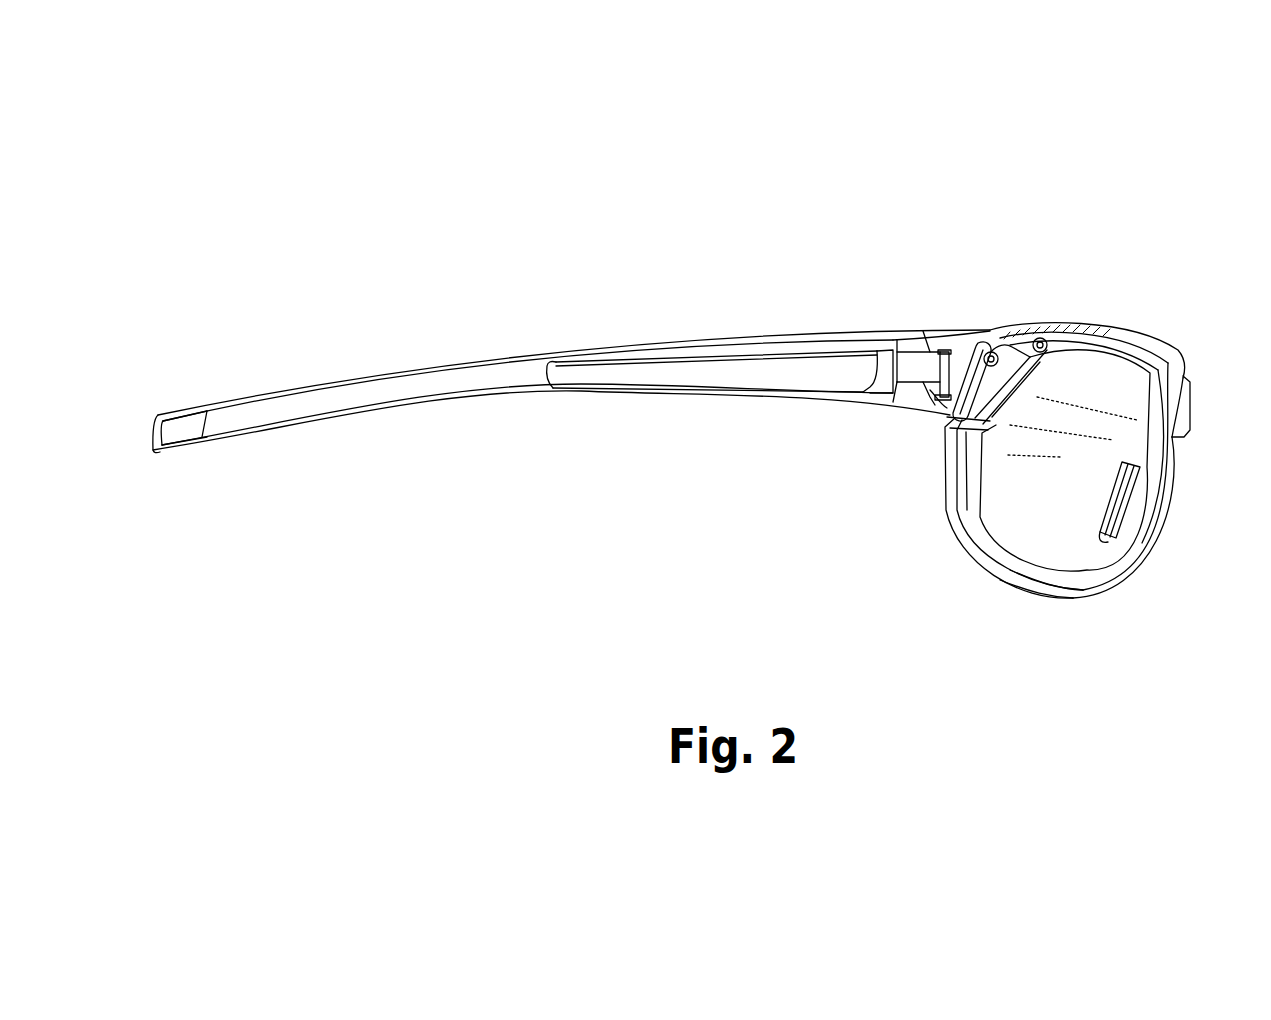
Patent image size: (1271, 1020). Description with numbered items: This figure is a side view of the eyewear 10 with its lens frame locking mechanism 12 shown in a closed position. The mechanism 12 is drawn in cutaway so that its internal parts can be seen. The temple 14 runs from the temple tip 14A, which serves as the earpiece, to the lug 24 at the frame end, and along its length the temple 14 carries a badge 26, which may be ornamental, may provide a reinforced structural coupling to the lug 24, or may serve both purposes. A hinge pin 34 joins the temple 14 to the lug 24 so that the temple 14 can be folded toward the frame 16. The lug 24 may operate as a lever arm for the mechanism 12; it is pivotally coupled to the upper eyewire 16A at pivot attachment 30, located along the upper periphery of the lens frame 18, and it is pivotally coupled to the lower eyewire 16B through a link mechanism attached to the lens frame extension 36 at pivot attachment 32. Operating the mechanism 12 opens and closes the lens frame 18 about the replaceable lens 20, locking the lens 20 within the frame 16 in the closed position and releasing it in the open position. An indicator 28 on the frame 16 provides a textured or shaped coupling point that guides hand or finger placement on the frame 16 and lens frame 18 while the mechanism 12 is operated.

The eyewear 10 is at (625, 144).
The lens frame locking mechanism 12 is at (911, 233).
The temple 14 is at (587, 334).
The temple tip 14A is at (313, 385).
The frame 16 is at (1172, 470).
The upper eyewire 16A is at (1140, 330).
The lower eyewire 16B is at (1003, 580).
The lens frame 18 is at (1050, 605).
The lens 20 is at (1064, 514).
The lug 24 is at (928, 333).
The badge 26 is at (720, 372).
The indicator 28 is at (1093, 330).
The pivot attachment 30 is at (1040, 330).
The pivot attachment 32 is at (990, 333).
The hinge pin 34 is at (927, 417).
The lens frame extension 36 is at (943, 447).